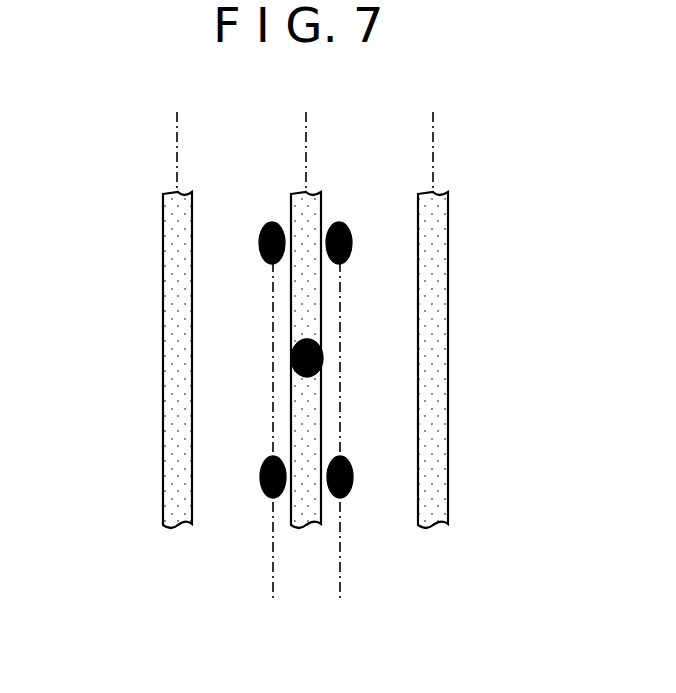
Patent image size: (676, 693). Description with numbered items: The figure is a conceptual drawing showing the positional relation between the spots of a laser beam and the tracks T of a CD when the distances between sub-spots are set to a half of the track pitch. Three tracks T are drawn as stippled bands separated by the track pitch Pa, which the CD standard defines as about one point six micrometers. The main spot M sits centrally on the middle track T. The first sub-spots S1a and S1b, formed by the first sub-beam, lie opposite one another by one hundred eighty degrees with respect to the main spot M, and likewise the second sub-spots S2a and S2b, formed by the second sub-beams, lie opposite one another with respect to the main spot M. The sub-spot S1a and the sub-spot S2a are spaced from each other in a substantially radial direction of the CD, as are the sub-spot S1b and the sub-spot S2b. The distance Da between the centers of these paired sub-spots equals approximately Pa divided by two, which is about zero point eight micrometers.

The track T is at (172, 323).
The main spot M is at (291, 355).
The first sub-spot S1a is at (352, 235).
The first sub-spot S1b is at (260, 477).
The second sub-spot S2a is at (259, 243).
The second sub-spot S2b is at (352, 477).
The track pitch Pa is at (433, 154).
The distance Da is at (240, 572).